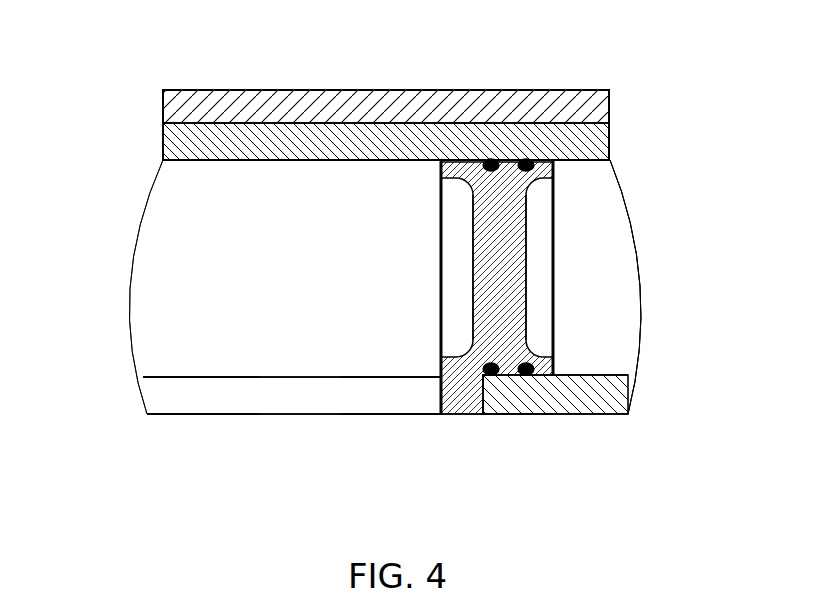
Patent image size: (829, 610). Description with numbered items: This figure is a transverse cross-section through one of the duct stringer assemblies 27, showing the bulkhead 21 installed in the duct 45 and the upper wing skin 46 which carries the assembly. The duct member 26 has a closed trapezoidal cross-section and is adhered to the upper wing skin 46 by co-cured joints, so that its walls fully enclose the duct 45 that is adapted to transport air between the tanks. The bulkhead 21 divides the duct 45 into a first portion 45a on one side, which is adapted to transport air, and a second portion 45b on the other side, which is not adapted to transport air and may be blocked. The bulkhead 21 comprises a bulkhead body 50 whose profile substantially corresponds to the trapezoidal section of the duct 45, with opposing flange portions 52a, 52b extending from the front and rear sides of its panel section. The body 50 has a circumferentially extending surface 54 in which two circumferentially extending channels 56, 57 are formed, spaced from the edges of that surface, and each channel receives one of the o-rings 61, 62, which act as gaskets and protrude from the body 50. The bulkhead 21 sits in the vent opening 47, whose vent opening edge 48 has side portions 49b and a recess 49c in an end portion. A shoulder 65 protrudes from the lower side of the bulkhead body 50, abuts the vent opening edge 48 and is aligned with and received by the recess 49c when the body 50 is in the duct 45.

The bulkhead 21 is at (604, 273).
The duct member 26 is at (168, 143).
The duct stringer assembly 27 is at (595, 148).
The duct 45 is at (301, 281).
The first portion of the duct 45a is at (157, 275).
The second portion of the duct 45b is at (617, 307).
The upper wing skin 46 is at (550, 113).
The vent opening 47 is at (297, 403).
The vent opening edge 48 is at (368, 403).
The side portion 49b is at (242, 403).
The recess 49c is at (489, 400).
The bulkhead body 50 is at (472, 260).
The first flange portion 52a is at (452, 172).
The second flange portion 52b is at (553, 169).
The circumferentially extending surface 54 is at (568, 410).
The first channel 56 is at (472, 197).
The second channel 57 is at (530, 183).
The first o-ring 61 is at (490, 160).
The second o-ring 62 is at (525, 160).
The shoulder 65 is at (463, 403).